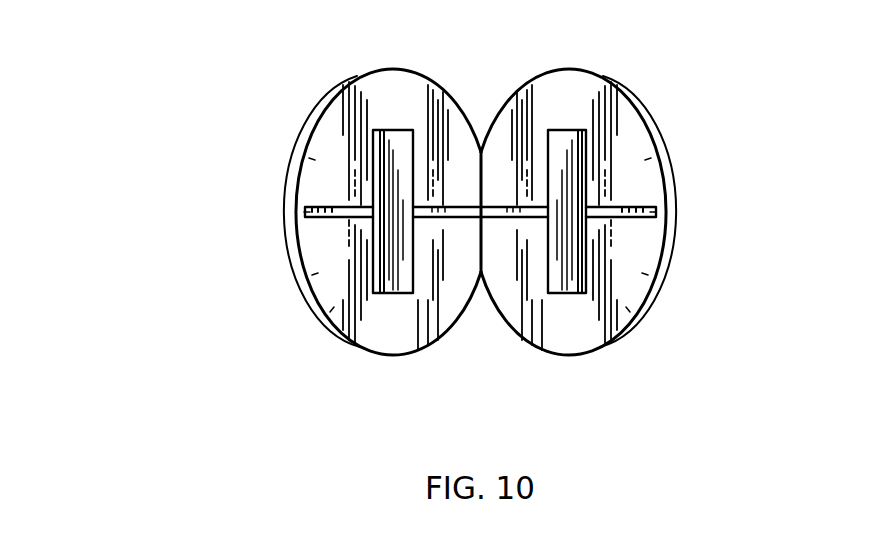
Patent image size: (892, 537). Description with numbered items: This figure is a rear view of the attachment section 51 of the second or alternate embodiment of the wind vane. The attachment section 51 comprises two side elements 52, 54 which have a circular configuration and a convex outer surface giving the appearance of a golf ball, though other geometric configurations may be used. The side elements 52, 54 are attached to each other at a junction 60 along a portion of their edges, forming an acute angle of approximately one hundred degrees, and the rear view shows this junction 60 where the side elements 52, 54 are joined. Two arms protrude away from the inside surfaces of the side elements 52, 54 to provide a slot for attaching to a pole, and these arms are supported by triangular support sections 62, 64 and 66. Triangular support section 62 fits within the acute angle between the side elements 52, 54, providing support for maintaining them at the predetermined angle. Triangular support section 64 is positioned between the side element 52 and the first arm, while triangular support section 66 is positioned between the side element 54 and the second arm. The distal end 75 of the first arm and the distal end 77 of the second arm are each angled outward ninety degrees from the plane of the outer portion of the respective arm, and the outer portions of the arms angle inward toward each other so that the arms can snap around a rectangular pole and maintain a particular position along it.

The attachment section 51 is at (198, 250).
The side element 52 is at (643, 113).
The side element 54 is at (322, 112).
The junction 60 is at (481, 152).
The triangular support section 62 is at (462, 206).
The triangular support section 64 is at (640, 207).
The triangular support section 66 is at (320, 207).
The distal end of first arm 75 is at (560, 287).
The distal end of second arm 77 is at (398, 287).